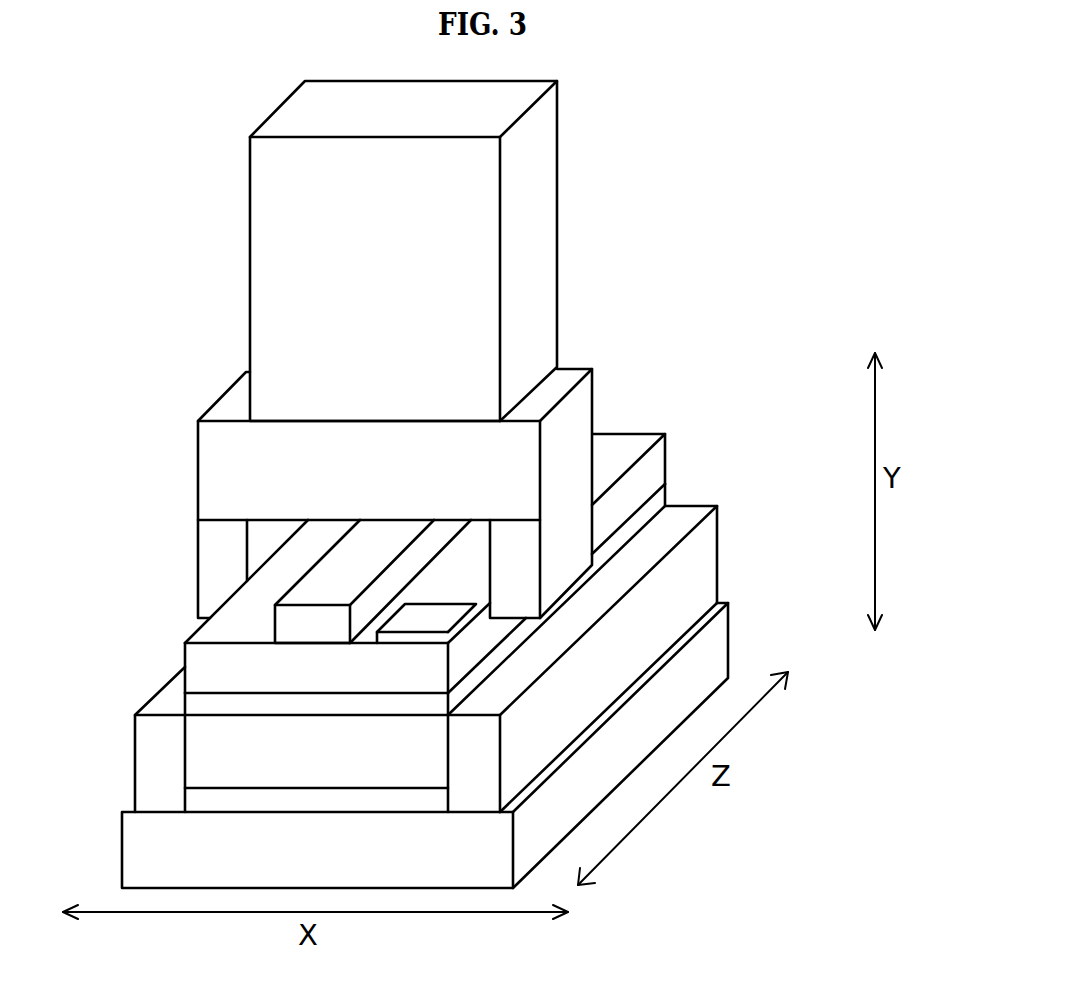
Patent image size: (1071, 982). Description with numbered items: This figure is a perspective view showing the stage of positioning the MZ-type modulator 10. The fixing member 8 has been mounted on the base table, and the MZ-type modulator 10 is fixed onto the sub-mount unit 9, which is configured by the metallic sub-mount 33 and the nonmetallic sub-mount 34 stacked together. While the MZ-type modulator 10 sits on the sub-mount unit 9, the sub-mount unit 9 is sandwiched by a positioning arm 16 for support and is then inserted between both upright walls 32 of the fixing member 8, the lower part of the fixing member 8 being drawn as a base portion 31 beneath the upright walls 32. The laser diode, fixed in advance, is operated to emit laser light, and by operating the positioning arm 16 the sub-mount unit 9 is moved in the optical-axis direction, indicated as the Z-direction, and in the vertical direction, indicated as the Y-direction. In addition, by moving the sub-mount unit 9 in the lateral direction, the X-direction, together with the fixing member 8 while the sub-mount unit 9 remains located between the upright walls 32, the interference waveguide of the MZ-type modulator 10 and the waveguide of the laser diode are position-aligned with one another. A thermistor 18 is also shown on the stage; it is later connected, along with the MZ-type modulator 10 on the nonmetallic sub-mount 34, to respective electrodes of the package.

The positioning arm 16 is at (537, 235).
The MZ-type modulator 10 is at (275, 622).
The thermistor 18 is at (445, 620).
The sub-mount unit 9 is at (452, 611).
The nonmetallic sub-mount 34 is at (653, 460).
The metallic sub-mount 33 is at (657, 497).
The fixing member 8 is at (452, 697).
The upright walls 32 is at (688, 547).
The base plate 31 is at (706, 642).